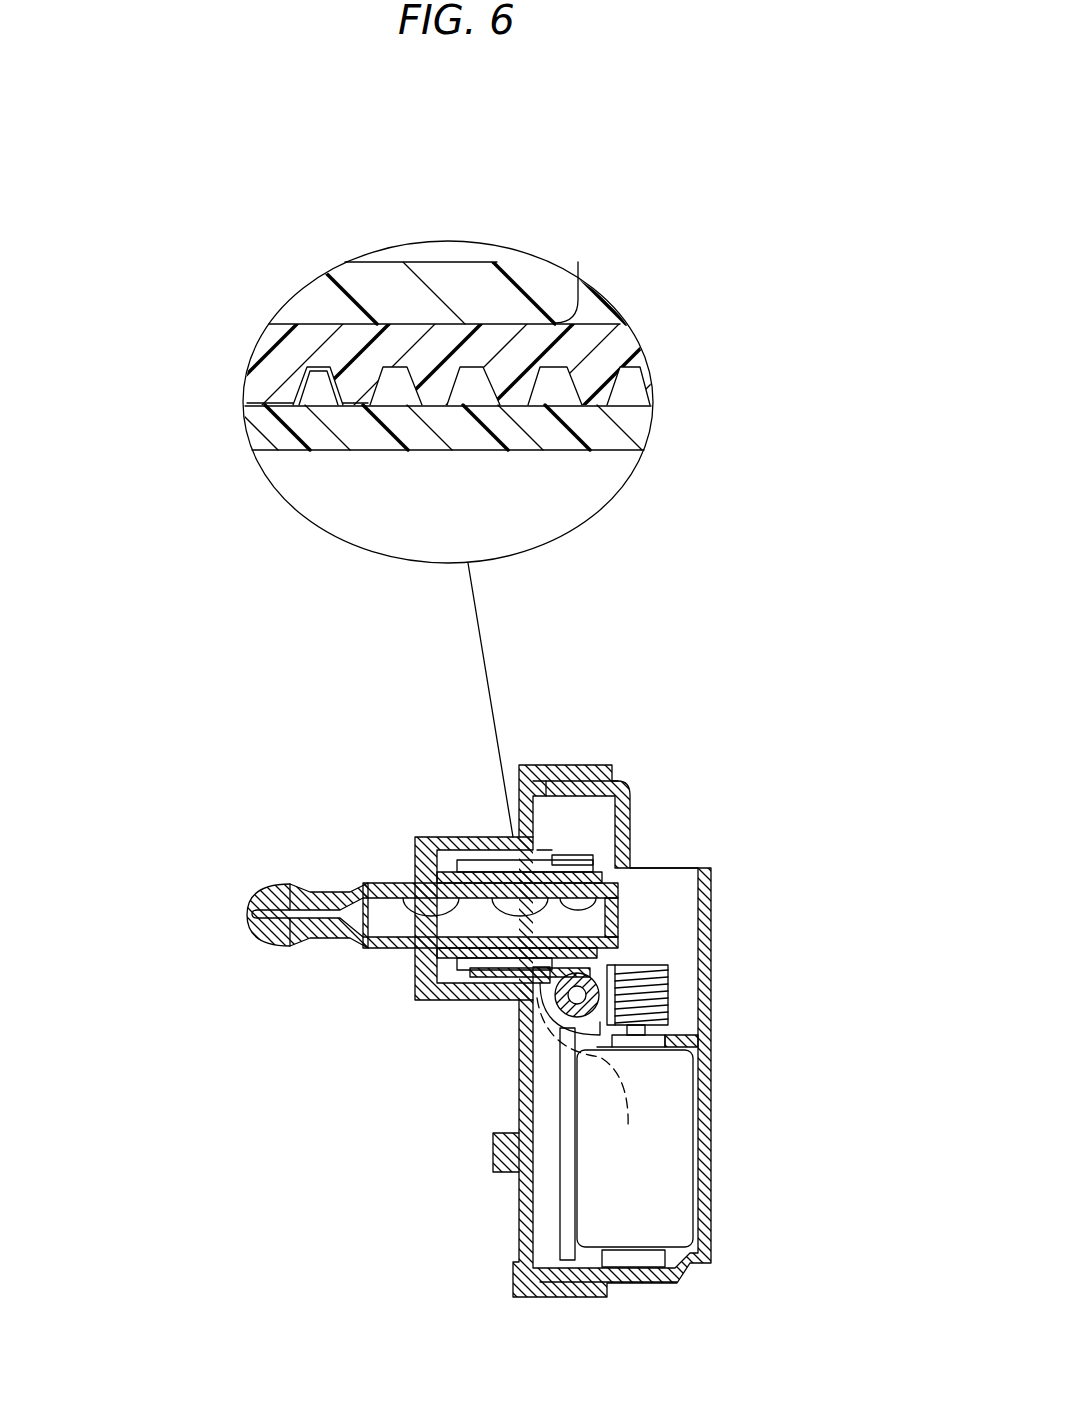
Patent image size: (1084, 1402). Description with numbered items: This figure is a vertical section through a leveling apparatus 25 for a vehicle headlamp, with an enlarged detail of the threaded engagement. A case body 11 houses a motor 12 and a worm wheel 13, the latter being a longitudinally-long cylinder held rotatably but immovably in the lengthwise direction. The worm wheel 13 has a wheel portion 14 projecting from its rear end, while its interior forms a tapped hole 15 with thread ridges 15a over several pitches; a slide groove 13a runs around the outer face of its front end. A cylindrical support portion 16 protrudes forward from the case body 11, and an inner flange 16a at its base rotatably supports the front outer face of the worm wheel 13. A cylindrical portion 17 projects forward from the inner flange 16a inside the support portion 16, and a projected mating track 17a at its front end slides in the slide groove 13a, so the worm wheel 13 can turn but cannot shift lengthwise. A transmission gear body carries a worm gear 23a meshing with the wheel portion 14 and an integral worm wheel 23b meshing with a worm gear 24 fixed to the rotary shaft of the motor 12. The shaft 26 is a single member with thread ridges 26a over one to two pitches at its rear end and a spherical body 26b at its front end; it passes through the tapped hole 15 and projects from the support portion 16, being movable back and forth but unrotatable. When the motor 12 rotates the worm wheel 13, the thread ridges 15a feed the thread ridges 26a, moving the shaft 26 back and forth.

The case body 11 is at (620, 777).
The motor 12 is at (680, 1137).
The worm wheel 13 is at (585, 333).
The slide groove 13a is at (455, 999).
The wheel portion 14 is at (590, 858).
The tapped hole 15 is at (610, 390).
The thread ridges 15a is at (613, 390).
The support portion 16 is at (432, 836).
The inner flange 16a is at (497, 251).
The cylindrical portion 17 is at (388, 277).
The projected mating track 17a is at (392, 888).
The worm gear 23a is at (597, 960).
The worm wheel 23b is at (595, 1078).
The worm gear 24 is at (668, 983).
The leveling apparatus 25 is at (615, 722).
The shaft 26 is at (594, 448).
The thread ridges 26a is at (304, 378).
The spherical body 26b is at (258, 948).